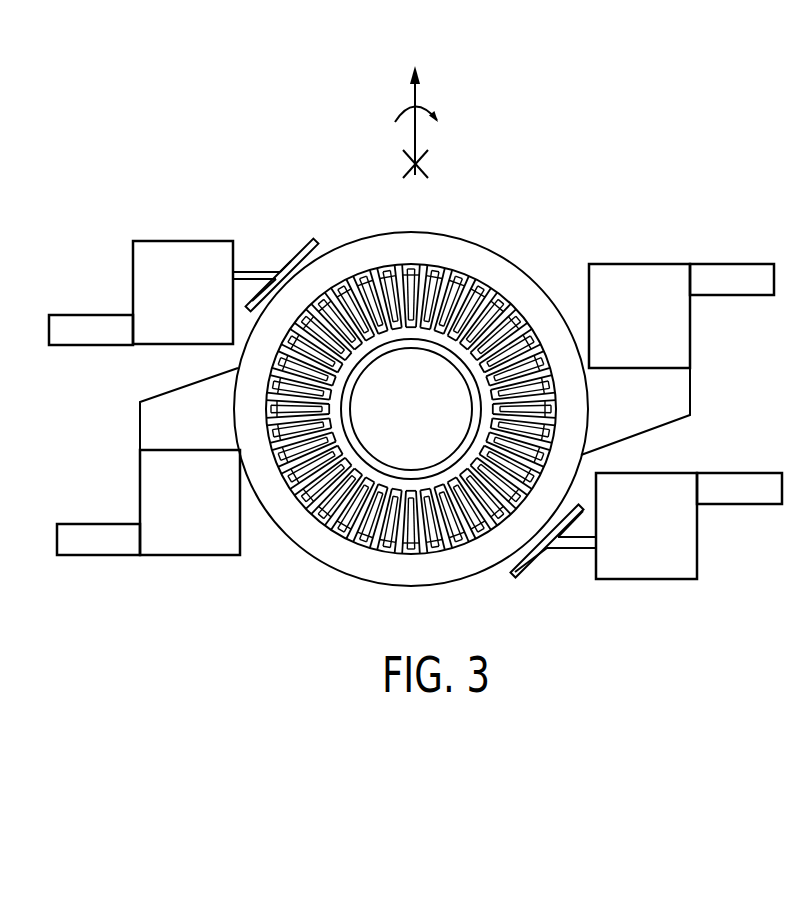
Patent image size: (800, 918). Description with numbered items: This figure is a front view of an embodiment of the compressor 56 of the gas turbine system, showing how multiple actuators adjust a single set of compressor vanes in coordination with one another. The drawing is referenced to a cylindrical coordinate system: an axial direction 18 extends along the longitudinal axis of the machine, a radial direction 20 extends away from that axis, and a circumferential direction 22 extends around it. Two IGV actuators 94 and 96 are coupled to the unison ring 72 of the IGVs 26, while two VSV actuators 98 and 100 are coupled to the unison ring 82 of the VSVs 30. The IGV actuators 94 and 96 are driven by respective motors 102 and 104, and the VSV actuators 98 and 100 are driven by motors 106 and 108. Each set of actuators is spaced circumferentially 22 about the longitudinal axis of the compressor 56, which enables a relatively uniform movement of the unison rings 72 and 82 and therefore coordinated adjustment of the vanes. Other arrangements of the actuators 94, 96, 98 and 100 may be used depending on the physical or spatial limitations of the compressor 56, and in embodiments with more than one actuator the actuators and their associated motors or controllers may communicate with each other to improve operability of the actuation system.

The axial direction 18 is at (413, 163).
The radial direction 20 is at (417, 87).
The circumferential direction 22 is at (402, 104).
The IGVs 26 is at (378, 276).
The VSVs 30 is at (507, 294).
The compressor 56 is at (549, 165).
The unison ring 72 is at (416, 231).
The unison ring 82 is at (541, 282).
The IGV actuator 94 is at (180, 241).
The IGV actuator 96 is at (650, 581).
The VSV actuator 98 is at (647, 264).
The VSV actuator 100 is at (178, 557).
The motor 102 is at (90, 315).
The motor 104 is at (738, 507).
The motor 106 is at (732, 264).
The motor 108 is at (100, 557).